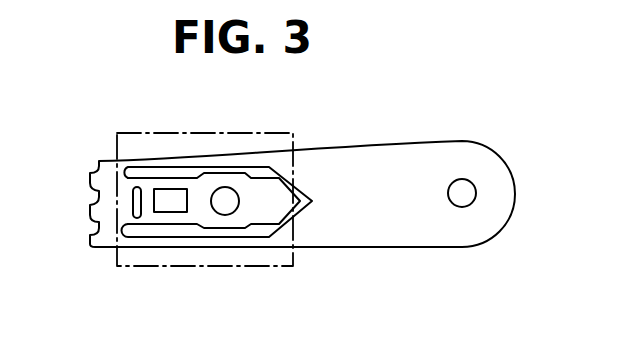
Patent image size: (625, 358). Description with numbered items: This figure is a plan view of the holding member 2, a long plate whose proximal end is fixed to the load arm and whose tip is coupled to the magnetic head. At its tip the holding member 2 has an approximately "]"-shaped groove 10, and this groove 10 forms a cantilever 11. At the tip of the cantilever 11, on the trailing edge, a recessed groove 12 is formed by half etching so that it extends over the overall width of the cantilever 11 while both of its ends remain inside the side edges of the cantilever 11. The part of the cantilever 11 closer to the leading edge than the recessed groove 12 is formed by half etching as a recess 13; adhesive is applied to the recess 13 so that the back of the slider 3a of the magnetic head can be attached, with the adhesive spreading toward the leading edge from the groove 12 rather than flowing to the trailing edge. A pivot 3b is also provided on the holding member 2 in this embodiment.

The holding member 2 is at (398, 155).
The slider 3a is at (142, 128).
The pivot 3b is at (223, 205).
The groove 10 is at (267, 167).
The cantilever 11 is at (265, 200).
The recessed groove 12 is at (134, 205).
The recess 13 is at (158, 207).